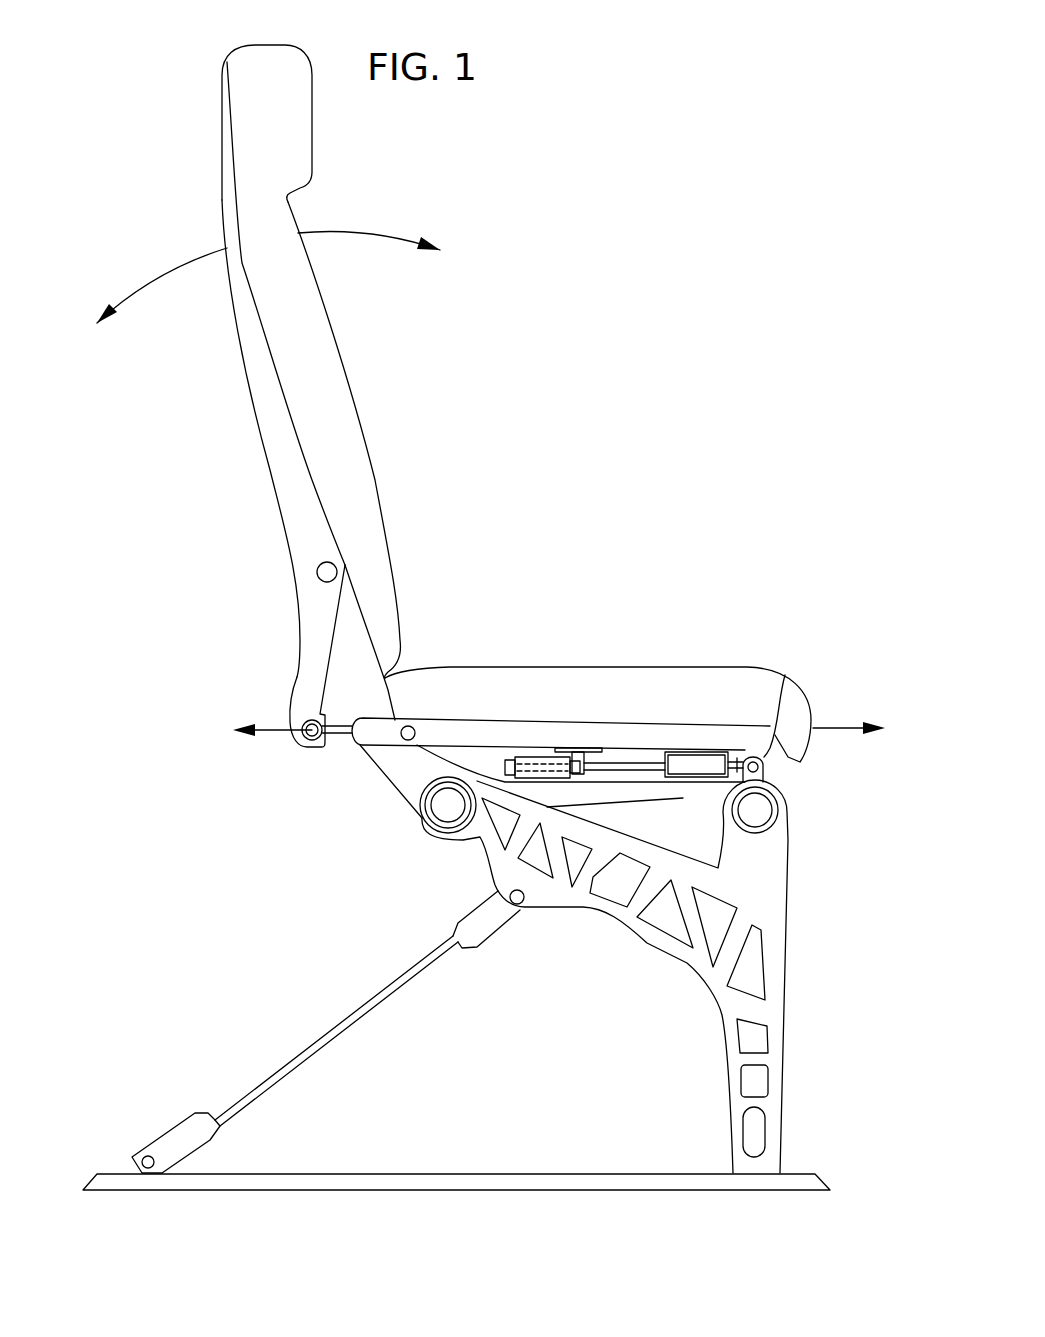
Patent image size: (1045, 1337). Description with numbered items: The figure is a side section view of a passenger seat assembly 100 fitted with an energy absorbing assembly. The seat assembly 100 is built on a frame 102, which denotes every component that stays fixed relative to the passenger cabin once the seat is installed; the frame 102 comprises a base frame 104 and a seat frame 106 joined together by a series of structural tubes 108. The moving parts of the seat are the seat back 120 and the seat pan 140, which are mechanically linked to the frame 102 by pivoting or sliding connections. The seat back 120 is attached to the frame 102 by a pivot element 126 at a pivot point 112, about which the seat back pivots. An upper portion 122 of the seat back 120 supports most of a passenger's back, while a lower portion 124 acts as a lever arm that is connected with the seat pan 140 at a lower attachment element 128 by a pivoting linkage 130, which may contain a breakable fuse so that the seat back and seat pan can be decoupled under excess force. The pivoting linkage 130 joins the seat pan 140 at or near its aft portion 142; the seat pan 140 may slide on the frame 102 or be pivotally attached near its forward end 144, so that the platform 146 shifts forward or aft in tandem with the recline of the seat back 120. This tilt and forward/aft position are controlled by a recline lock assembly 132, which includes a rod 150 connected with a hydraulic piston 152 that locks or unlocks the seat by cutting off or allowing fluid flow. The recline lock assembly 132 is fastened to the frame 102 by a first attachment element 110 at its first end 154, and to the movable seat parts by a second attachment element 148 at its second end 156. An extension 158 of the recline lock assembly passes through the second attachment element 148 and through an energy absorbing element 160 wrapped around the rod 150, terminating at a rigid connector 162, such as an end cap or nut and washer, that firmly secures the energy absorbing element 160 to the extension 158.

The seat assembly 100 is at (633, 412).
The frame 102 is at (809, 900).
The base frame 104 is at (790, 857).
The seat frame 106 is at (397, 780).
The structural tubes 108 is at (428, 830).
The first attachment element 110 is at (785, 675).
The pivot point 112 is at (317, 570).
The seat back 120 is at (340, 393).
The upper portion 122 is at (313, 477).
The lower portion 124 is at (297, 677).
The pivot element 126 is at (340, 567).
The lower attachment element 128 is at (302, 738).
The pivoting linkage 130 is at (329, 756).
The recline lock assembly 132 is at (303, 130).
The seat pan 140 is at (700, 702).
The aft portion 142 is at (363, 745).
The forward end 144 is at (813, 728).
The platform 146 is at (563, 725).
The second attachment element 148 is at (595, 725).
The rod 150 is at (615, 767).
The hydraulic piston 152 is at (713, 763).
The first end 154 is at (757, 762).
The second end 156 is at (590, 777).
The extension 158 is at (545, 765).
The energy absorbing element 160 is at (530, 757).
The rigid connector 162 is at (503, 765).